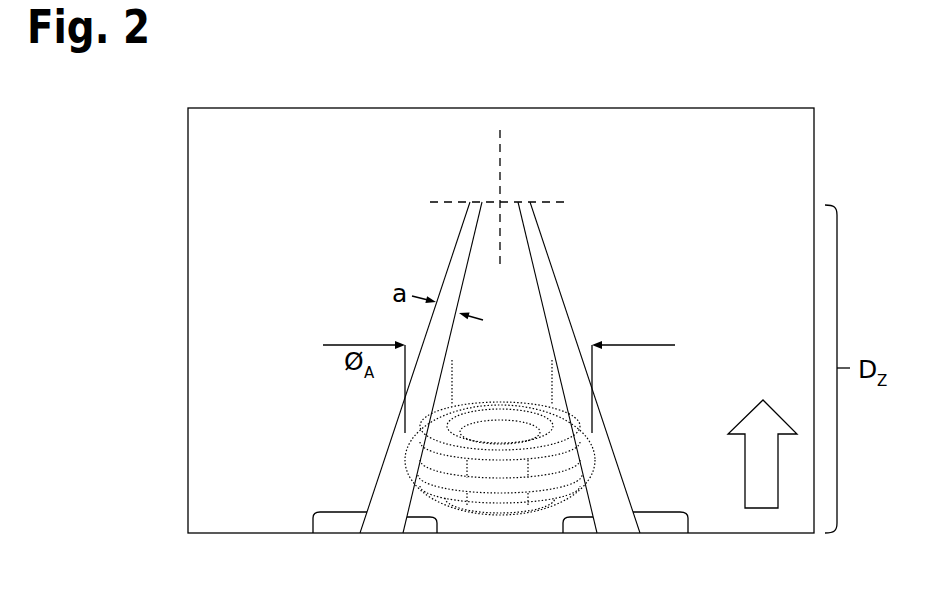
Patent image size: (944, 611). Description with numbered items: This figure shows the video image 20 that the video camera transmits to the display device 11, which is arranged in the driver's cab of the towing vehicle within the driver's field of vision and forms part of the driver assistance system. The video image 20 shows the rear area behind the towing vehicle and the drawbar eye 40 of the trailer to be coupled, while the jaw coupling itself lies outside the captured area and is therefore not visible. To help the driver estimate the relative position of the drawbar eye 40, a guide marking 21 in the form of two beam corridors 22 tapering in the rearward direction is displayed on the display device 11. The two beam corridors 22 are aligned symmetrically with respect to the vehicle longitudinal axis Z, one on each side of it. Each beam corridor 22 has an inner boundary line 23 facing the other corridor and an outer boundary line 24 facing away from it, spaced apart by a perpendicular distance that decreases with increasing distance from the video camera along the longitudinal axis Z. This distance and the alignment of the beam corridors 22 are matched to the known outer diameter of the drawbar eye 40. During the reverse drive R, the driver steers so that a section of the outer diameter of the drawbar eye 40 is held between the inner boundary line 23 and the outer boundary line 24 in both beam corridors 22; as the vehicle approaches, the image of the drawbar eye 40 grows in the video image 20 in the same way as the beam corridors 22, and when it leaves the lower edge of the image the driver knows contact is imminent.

The display device 11 is at (188, 243).
The video image 20 is at (742, 177).
The guide marking 21 is at (446, 184).
The beam corridor 22 is at (447, 260).
The inner boundary line 23 is at (437, 533).
The outer boundary line 24 is at (313, 533).
The drawbar eye 40 is at (407, 462).
The vehicle longitudinal axis Z is at (503, 145).
The reverse drive R is at (760, 508).